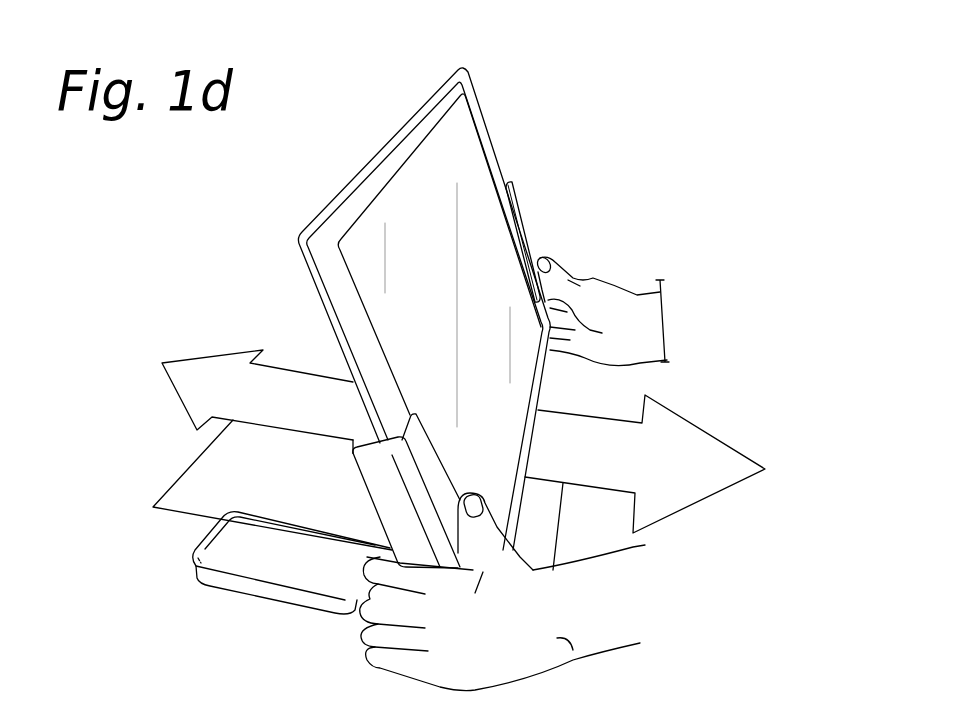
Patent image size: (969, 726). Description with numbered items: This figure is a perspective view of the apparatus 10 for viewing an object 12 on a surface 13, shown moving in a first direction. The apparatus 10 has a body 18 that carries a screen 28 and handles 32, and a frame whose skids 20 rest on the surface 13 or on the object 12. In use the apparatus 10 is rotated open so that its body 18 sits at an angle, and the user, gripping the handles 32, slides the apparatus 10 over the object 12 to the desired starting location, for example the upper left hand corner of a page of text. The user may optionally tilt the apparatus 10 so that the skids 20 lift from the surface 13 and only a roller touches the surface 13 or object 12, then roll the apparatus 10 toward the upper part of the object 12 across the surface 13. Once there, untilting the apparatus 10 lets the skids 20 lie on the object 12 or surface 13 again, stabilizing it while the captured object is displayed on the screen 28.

The apparatus 10 is at (302, 200).
The body 18 is at (492, 100).
The screen 28 is at (497, 257).
The handles 32 is at (517, 212).
The surface 13 is at (268, 320).
The object 12 is at (190, 493).
The skids 20 is at (240, 603).